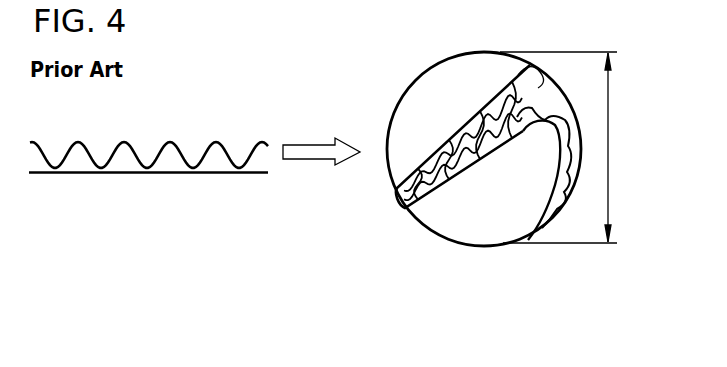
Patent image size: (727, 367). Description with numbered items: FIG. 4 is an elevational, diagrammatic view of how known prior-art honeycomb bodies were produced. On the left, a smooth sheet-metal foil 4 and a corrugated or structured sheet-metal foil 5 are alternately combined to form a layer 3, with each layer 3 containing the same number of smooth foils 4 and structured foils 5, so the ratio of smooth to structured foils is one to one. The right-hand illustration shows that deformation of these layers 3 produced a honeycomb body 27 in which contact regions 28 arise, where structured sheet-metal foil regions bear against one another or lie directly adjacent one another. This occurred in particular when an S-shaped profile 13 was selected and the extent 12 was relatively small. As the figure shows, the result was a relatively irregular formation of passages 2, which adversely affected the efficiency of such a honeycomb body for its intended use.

The layer 3 is at (148, 193).
The smooth sheet-metal foil 4 is at (165, 174).
The structured sheet-metal foil 5 is at (186, 156).
The honeycomb body 27 is at (465, 68).
The passage 2 is at (403, 207).
The contact region 28 is at (467, 140).
The S-shaped profile 13 is at (542, 192).
The extent 12 is at (612, 146).